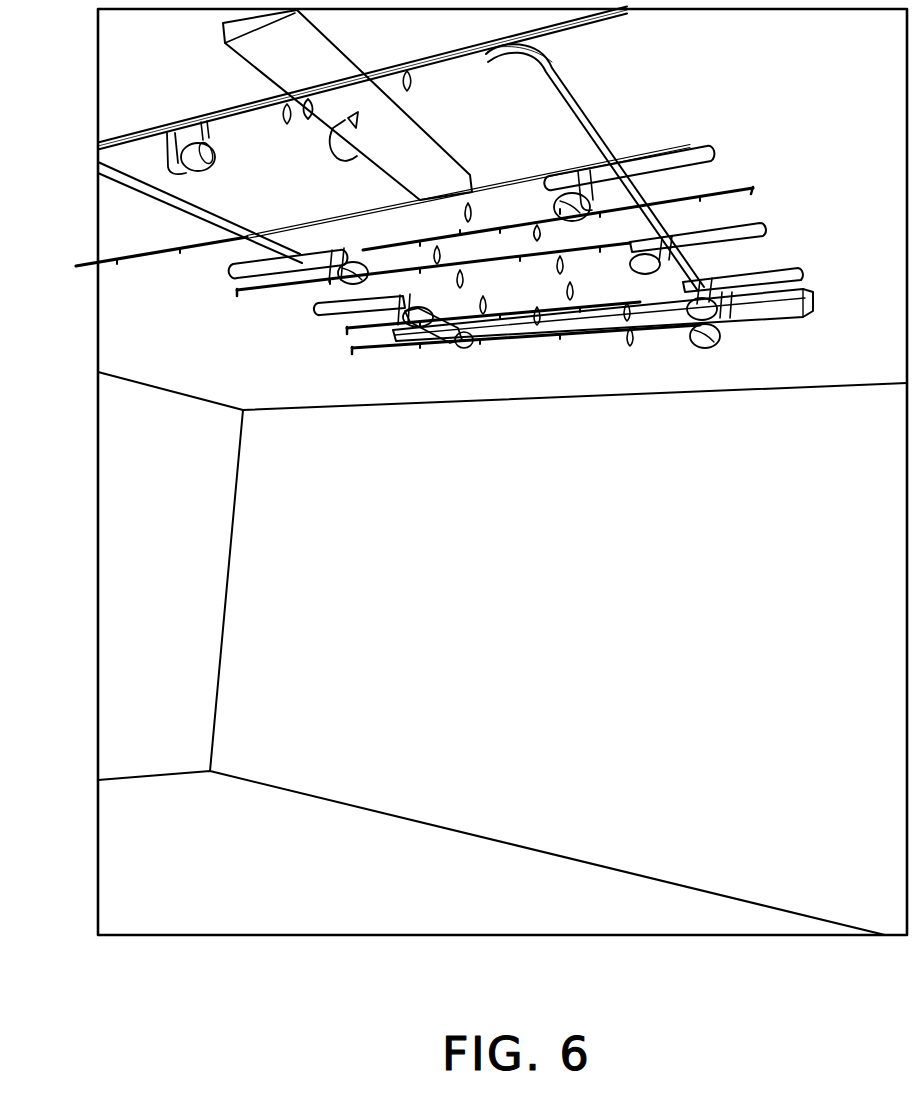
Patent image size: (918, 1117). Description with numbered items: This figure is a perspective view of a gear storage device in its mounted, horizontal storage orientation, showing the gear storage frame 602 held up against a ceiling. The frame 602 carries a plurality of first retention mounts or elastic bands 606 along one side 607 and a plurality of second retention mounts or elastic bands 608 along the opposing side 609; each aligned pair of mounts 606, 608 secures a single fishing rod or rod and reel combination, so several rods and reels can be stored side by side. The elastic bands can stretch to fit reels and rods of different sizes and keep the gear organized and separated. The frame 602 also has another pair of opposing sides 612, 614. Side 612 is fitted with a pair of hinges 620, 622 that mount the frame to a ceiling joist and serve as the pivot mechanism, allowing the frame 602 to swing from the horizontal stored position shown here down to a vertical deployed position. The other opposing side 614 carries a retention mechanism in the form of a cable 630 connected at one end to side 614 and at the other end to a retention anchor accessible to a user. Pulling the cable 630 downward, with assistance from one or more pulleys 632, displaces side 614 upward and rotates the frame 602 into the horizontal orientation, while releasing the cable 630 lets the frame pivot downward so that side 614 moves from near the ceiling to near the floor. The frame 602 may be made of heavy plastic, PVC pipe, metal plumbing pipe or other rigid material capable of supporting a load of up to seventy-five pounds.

The gear storage frame 602 is at (527, 62).
The first retention mounts 606 is at (610, 172).
The one side of the frame 607 is at (570, 70).
The second retention mounts 608 is at (332, 310).
The opposing side of the frame 609 is at (165, 201).
The side of the frame 612 is at (595, 335).
The other opposing side of the frame 614 is at (220, 117).
The hinge 620 is at (733, 318).
The hinge 622 is at (471, 348).
The cable 630 is at (310, 110).
The pulley 632 is at (357, 160).